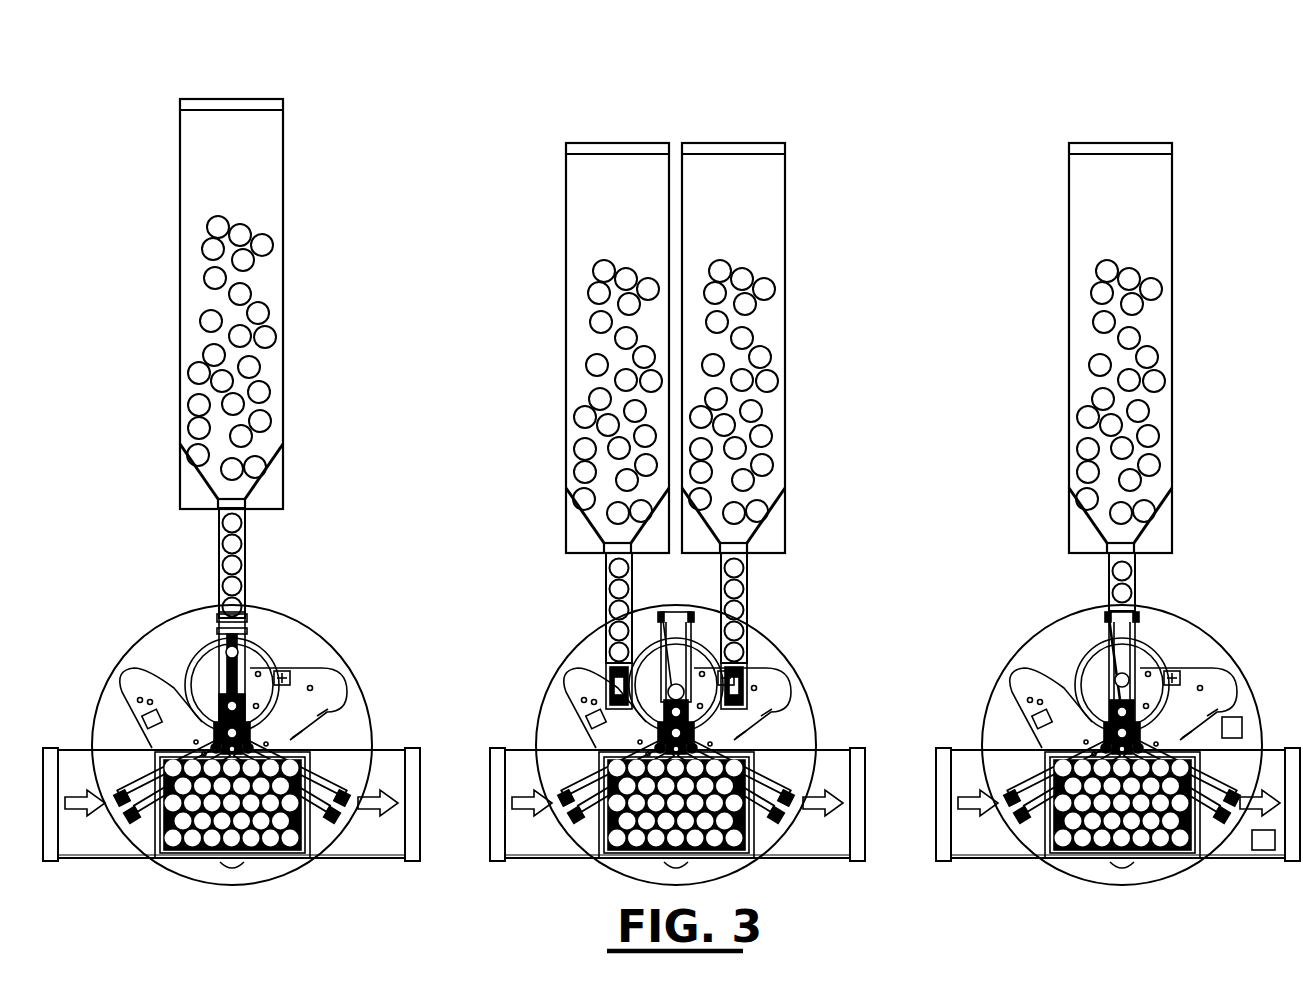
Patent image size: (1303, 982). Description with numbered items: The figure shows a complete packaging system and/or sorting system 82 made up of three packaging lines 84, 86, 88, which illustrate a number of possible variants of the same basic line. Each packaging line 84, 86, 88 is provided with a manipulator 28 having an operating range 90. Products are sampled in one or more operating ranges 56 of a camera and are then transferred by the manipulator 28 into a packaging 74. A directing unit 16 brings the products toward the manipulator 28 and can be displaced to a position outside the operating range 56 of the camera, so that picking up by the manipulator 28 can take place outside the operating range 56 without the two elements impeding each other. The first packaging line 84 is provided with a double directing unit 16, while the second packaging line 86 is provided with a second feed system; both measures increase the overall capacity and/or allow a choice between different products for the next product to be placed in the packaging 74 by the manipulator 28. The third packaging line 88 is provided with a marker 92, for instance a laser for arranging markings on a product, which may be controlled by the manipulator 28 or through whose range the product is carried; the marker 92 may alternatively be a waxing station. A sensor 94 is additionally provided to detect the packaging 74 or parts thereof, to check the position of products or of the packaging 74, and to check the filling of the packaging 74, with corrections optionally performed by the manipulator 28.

The packaging system and/or sorting system 82 is at (946, 106).
The packaging line 84 is at (334, 320).
The packaging line 86 is at (836, 338).
The packaging line 88 is at (1223, 302).
The operating range 90 is at (298, 622).
The manipulator 28 is at (376, 652).
The operating range 56 is at (303, 573).
The directing unit 16 is at (186, 624).
The packaging 74 is at (165, 888).
The marker 92 is at (1238, 726).
The sensor 94 is at (1262, 853).